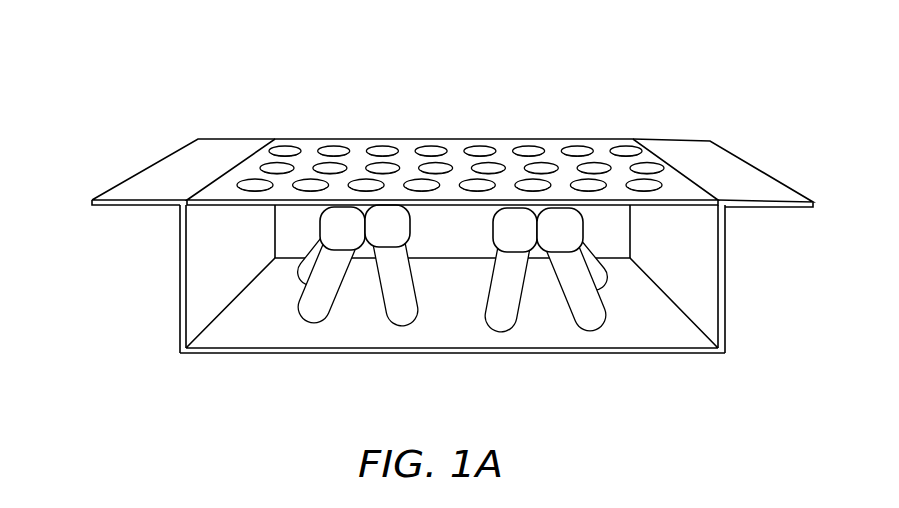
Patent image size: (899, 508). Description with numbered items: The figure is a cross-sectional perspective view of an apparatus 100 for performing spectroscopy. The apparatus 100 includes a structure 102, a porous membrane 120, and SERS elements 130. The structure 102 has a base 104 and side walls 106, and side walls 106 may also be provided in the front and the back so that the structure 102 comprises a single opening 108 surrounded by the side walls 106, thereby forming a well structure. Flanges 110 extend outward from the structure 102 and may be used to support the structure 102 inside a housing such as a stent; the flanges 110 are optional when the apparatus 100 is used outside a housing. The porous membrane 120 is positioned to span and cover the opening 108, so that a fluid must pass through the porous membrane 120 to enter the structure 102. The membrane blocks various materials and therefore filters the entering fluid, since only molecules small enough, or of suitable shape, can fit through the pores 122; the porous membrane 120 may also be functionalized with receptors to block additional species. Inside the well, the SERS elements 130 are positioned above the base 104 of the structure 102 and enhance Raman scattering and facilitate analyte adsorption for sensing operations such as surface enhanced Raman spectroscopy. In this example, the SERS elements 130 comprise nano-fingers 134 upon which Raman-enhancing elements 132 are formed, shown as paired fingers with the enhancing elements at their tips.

The apparatus 100 is at (425, 227).
The structure 102 is at (429, 327).
The base 104 is at (277, 352).
The side walls 106 is at (727, 305).
The opening 108 is at (448, 226).
The flanges 110 is at (670, 138).
The porous membrane 120 is at (452, 120).
The pores 122 is at (530, 108).
The SERS elements 130 is at (337, 194).
The Raman-enhancing elements 132 is at (322, 224).
The nano-fingers 134 is at (316, 275).